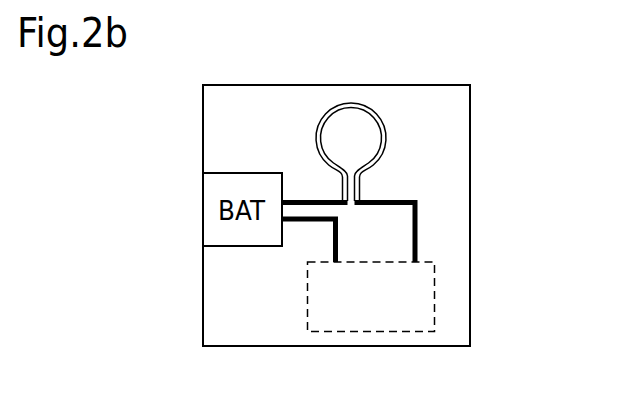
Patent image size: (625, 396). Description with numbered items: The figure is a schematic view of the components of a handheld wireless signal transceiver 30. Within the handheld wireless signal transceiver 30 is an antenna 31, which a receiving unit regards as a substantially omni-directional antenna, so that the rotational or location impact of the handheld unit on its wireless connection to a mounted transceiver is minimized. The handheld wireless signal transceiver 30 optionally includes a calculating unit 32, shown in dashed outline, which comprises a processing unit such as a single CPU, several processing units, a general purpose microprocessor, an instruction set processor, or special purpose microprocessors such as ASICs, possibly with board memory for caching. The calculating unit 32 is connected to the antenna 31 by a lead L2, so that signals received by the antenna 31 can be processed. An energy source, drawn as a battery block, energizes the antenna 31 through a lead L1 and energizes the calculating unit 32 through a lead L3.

The handheld wireless signal transceiver 30 is at (470, 122).
The antenna 31 is at (318, 137).
The calculating unit 32 is at (432, 302).
The lead L1 is at (307, 199).
The lead L2 is at (392, 199).
The lead L3 is at (339, 245).